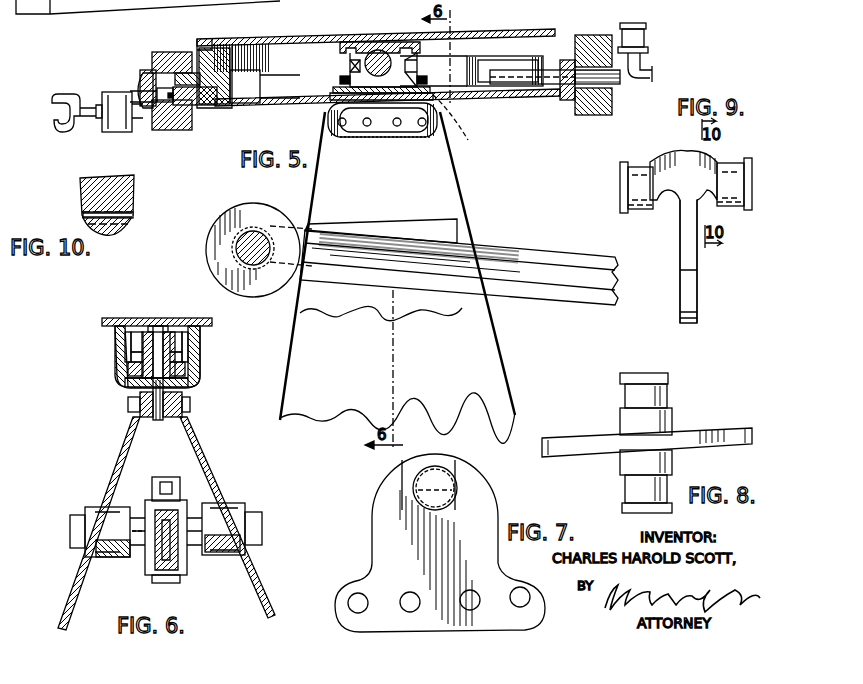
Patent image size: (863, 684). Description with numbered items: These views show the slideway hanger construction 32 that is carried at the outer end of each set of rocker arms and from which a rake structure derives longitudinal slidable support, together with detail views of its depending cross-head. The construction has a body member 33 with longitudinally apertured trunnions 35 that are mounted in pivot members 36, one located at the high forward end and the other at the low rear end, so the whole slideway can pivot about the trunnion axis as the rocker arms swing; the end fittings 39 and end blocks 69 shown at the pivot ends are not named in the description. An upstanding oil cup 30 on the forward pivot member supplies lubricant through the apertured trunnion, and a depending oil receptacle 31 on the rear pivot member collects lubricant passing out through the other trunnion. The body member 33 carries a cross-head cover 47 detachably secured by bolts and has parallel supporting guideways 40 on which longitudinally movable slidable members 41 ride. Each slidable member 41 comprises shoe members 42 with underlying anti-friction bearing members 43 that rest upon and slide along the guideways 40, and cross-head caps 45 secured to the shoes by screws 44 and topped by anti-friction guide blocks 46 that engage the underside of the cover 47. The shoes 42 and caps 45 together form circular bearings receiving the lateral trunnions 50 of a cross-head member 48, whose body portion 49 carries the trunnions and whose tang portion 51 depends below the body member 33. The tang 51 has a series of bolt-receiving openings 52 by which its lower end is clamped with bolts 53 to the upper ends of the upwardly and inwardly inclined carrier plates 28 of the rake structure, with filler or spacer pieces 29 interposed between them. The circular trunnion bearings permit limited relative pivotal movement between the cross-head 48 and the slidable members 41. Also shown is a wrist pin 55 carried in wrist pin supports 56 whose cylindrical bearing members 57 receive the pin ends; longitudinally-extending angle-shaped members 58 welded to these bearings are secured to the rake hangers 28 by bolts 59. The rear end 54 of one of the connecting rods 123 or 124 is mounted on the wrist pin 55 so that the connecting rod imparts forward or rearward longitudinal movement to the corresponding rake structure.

In FIG. 5, the carrier plates 28 is at (455, 200).
In FIG. 6, the carrier plates 28 is at (125, 462).
In FIG. 5, the filler or spacer pieces 29 is at (397, 266).
In FIG. 6, the filler or spacer pieces 29 is at (190, 435).
In FIG. 5, the oil cup 30 is at (648, 33).
In FIG. 5, the oil receptacle 31 is at (100, 95).
In FIG. 5, the slideway hanger construction 32 is at (292, 105).
In FIG. 6, the slideway hanger construction 32 is at (202, 345).
In FIG. 5, the body member 33 is at (497, 97).
In FIG. 5, the longitudinally apertured trunnions 35 is at (215, 108).
In FIG. 5, the pivot members 36 is at (196, 112).
In FIG. 5, the fitting 39 is at (150, 72).
In FIG. 6, the supporting guideways 40 is at (130, 383).
In FIG. 5, the slidable members 41 is at (352, 60).
In FIG. 6, the slidable members 41 is at (134, 356).
In FIG. 5, the shoe members 42 is at (412, 75).
In FIG. 6, the shoe members 42 is at (132, 368).
In FIG. 5, the anti-friction bearing members 43 is at (340, 88).
In FIG. 5, the screws 44 is at (353, 42).
In FIG. 5, the cross-head caps 45 is at (407, 57).
In FIG. 6, the cross-head caps 45 is at (134, 332).
In FIG. 5, the anti-friction guide blocks 46 is at (372, 42).
In FIG. 6, the anti-friction guide blocks 46 is at (129, 332).
In FIG. 5, the cross-head cover 47 is at (330, 38).
In FIG. 6, the cross-head cover 47 is at (148, 318).
In FIG. 5, the cross-head member 48 is at (378, 63).
In FIG. 10, the cross-head member 48 is at (82, 178).
In FIG. 9, the cross-head member 48 is at (676, 229).
In FIG. 8, the cross-head member 48 is at (740, 404).
In FIG. 7, the cross-head member 48 is at (437, 466).
In FIG. 6, the cross-head member 48 is at (160, 330).
In FIG. 10, the body portion 49 is at (107, 192).
In FIG. 9, the body portion 49 is at (688, 153).
In FIG. 8, the body portion 49 is at (672, 418).
In FIG. 7, the body portion 49 is at (456, 472).
In FIG. 9, the lateral trunnions 50 is at (640, 208).
In FIG. 8, the lateral trunnions 50 is at (665, 395).
In FIG. 5, the tang portion 51 is at (383, 105).
In FIG. 9, the tang portion 51 is at (698, 288).
In FIG. 8, the tang portion 51 is at (722, 432).
In FIG. 7, the tang portion 51 is at (382, 527).
In FIG. 6, the tang portion 51 is at (158, 420).
In FIG. 7, the bolt-receiving openings 52 is at (512, 590).
In FIG. 6, the bolts 53 is at (128, 404).
In FIG. 5, the rear end of connecting rod 54 is at (262, 206).
In FIG. 5, the wrist pin 55 is at (240, 240).
In FIG. 6, the wrist pin 55 is at (130, 515).
In FIG. 5, the wrist pin supports 56 is at (410, 221).
In FIG. 6, the cylindrical bearing members 57 is at (100, 508).
In FIG. 6, the longitudinally-extending members 58 is at (105, 557).
In FIG. 6, the bolts 59 is at (72, 528).
In FIG. 5, the end block 69 is at (178, 130).
In FIG. 5, the connecting rod 123 is at (459, 266).
In FIG. 5, the connecting rod 124 is at (459, 266).